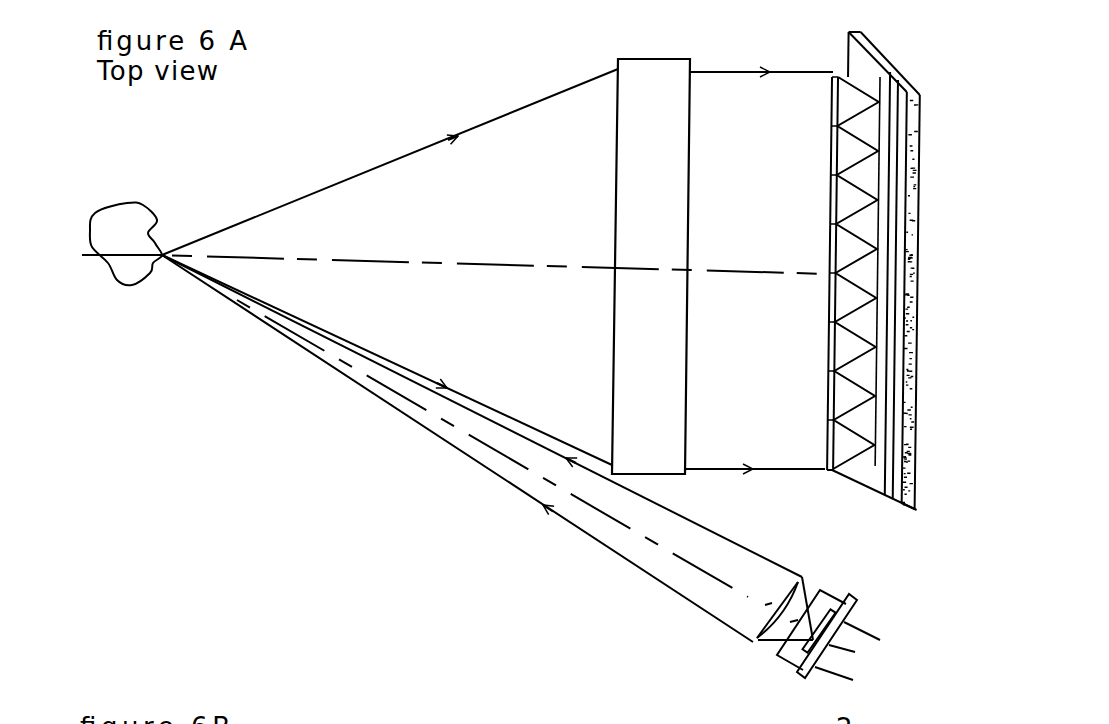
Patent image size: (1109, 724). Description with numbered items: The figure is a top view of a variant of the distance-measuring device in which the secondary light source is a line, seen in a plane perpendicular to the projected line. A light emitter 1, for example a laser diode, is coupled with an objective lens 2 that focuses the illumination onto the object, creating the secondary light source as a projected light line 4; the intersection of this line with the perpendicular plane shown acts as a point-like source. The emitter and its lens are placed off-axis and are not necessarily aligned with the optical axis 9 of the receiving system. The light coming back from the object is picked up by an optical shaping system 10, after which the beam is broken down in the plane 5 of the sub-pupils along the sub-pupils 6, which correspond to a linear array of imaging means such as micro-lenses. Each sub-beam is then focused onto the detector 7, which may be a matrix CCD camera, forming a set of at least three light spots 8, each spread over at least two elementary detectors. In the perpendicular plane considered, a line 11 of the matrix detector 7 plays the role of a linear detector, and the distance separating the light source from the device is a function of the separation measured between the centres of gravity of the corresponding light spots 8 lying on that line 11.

The light emitter 1 is at (791, 662).
The objective lens 2 is at (748, 647).
The light line 4 is at (167, 247).
The plane of the sub-pupils 5 is at (821, 476).
The sub-pupils 6 is at (827, 203).
The detector 7 is at (866, 479).
The light spots 8 is at (850, 302).
The optical axis 9 is at (448, 261).
The optical shaping system 10 is at (613, 132).
The line of the matrix detector 11 is at (904, 84).